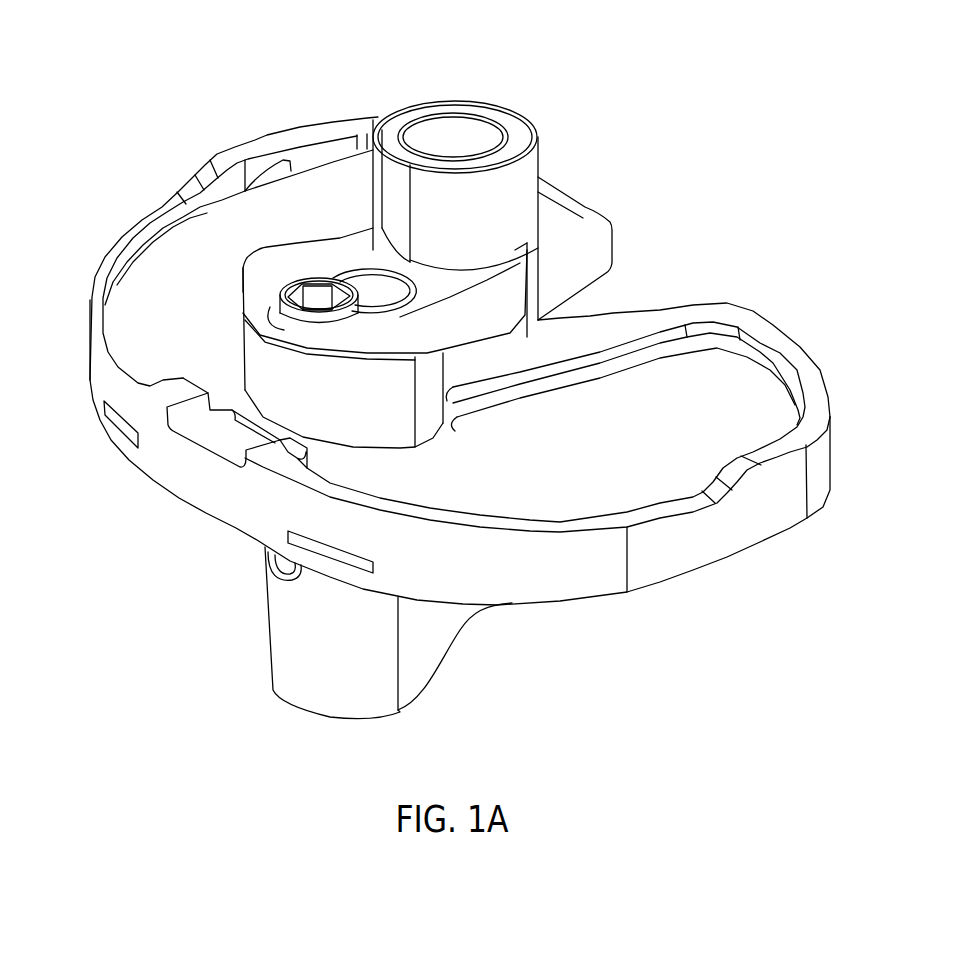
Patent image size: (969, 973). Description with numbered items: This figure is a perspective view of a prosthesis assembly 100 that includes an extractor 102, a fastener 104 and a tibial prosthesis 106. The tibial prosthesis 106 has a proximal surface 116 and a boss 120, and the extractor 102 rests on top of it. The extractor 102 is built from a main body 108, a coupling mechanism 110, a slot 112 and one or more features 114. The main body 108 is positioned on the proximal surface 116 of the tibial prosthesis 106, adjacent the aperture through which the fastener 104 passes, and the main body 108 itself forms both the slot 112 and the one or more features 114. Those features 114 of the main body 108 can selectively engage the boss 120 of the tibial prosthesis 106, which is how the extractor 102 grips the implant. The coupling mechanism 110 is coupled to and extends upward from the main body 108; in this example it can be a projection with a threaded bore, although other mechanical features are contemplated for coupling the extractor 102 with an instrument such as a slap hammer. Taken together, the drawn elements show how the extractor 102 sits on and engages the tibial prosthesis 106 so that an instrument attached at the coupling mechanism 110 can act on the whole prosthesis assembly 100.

The prosthesis assembly 100 is at (133, 150).
The extractor 102 is at (533, 105).
The fastener 104 is at (290, 283).
The tibial prosthesis 106 is at (142, 297).
The main body 108 is at (427, 330).
The coupling mechanism 110 is at (438, 130).
The slot 112 is at (375, 307).
The features 114 is at (459, 414).
The proximal surface 116 is at (708, 407).
The boss 120 is at (533, 372).